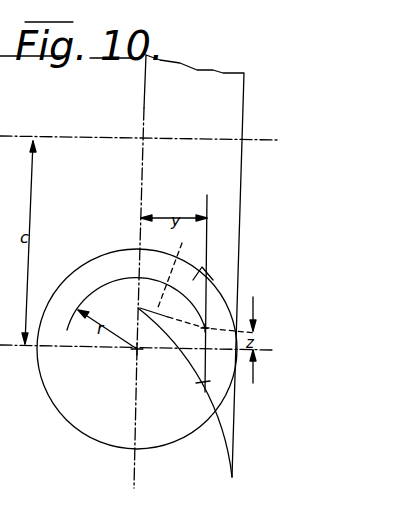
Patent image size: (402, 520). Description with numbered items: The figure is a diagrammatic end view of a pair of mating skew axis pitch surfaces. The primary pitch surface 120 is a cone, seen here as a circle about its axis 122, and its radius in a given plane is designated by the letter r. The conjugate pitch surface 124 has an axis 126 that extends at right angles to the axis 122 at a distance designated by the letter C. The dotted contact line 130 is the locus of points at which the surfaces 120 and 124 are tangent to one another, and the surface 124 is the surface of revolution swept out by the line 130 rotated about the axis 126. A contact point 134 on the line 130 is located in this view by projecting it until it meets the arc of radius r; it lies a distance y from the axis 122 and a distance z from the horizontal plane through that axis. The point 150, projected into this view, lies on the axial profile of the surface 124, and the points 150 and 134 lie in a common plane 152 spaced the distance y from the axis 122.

The primary pitch surface 120 is at (80, 410).
The axis 122 is at (135, 351).
The conjugate pitch surface 124 is at (223, 430).
The axis 126 is at (88, 136).
The contact line 130 is at (202, 267).
The point 134 is at (206, 328).
The point 150 is at (203, 382).
The plane 152 is at (208, 237).